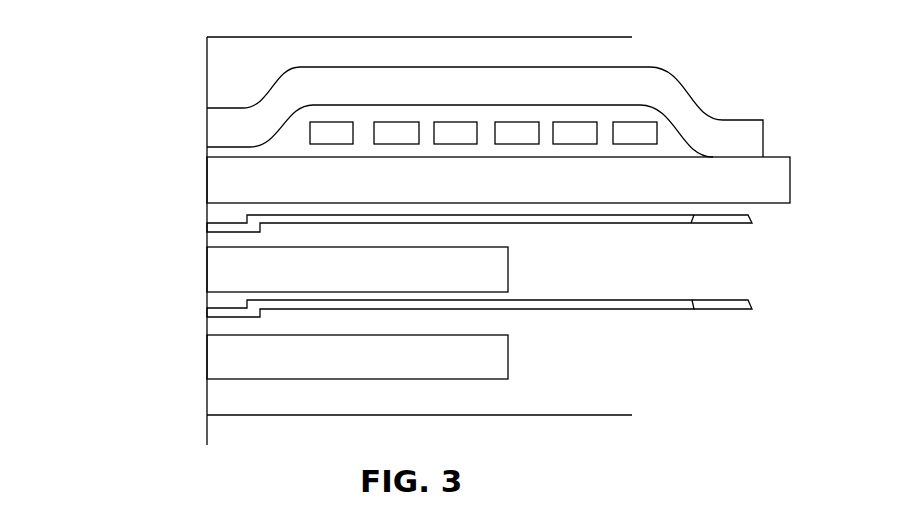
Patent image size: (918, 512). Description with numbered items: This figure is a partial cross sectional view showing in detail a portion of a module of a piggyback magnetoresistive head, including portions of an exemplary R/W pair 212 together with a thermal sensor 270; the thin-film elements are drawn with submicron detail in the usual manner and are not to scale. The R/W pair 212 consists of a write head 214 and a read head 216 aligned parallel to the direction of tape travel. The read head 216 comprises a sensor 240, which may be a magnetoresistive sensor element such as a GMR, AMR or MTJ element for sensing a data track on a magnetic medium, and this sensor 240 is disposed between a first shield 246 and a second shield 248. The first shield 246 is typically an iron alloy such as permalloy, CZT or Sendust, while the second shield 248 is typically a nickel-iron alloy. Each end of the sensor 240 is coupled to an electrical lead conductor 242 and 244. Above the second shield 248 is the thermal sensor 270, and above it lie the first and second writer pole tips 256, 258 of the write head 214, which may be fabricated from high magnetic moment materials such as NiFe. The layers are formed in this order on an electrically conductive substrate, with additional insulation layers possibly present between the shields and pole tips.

The R/W pair 212 is at (80, 86).
The write head 214 is at (121, 90).
The read head 216 is at (121, 240).
The second writer pole tip 258 is at (207, 129).
The first writer pole tip 256 is at (207, 180).
The thermal sensor 270 is at (207, 228).
The second shield 248 is at (207, 268).
The sensor 240 is at (207, 312).
The electrical lead conductor 242 is at (658, 300).
The electrical lead conductor 244 is at (725, 300).
The first shield 246 is at (207, 355).